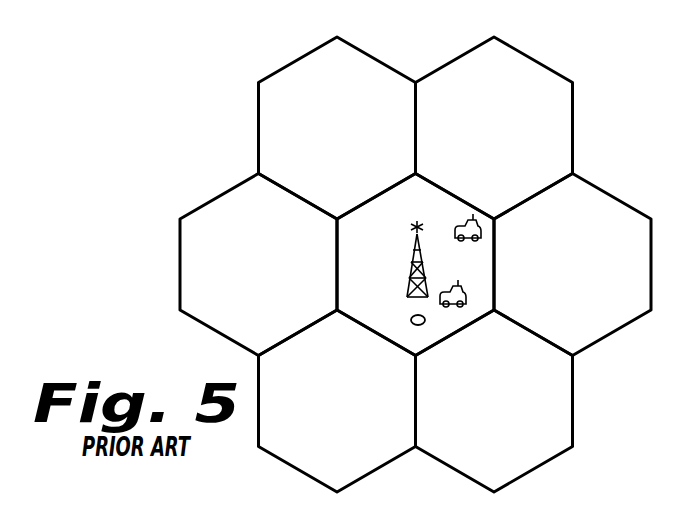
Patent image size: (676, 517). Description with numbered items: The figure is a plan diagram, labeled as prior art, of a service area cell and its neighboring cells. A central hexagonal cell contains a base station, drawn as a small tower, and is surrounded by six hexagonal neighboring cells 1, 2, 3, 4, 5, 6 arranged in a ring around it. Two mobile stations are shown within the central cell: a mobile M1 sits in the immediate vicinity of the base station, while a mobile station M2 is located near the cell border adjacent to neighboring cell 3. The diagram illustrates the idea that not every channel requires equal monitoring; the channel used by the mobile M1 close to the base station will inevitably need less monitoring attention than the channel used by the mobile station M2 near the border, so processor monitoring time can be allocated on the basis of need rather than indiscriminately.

The neighboring cell 1 is at (337, 128).
The neighboring cell 2 is at (494, 128).
The neighboring cell 3 is at (572, 265).
The neighboring cell 4 is at (494, 401).
The neighboring cell 5 is at (337, 401).
The neighboring cell 6 is at (258, 265).
The mobile M1 is at (466, 297).
The mobile station M2 is at (481, 231).